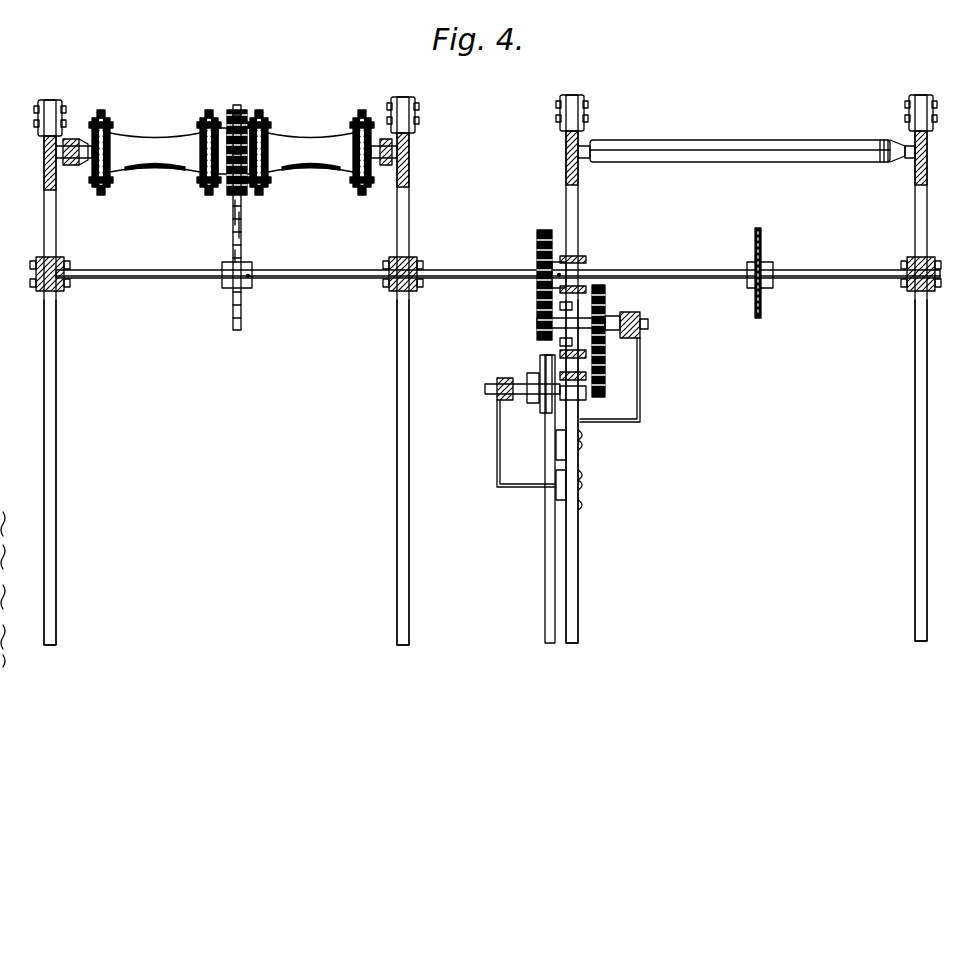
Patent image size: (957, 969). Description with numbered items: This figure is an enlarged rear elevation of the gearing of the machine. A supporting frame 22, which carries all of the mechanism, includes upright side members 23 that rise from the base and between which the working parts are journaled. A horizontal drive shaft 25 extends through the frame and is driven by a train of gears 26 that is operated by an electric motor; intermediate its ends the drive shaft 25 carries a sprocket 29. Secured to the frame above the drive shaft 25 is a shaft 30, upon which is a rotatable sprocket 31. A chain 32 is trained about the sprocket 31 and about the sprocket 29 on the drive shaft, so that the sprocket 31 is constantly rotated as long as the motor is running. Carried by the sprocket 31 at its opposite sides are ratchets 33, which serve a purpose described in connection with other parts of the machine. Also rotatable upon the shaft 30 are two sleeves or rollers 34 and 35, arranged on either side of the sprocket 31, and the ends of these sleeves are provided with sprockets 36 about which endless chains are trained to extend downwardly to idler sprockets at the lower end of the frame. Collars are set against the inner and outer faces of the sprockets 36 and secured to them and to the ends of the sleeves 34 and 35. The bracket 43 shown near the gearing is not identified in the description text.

The supporting frame 22 is at (405, 228).
The upright side members 23 is at (55, 430).
The horizontal drive shaft 25 is at (642, 270).
The train of gears 26 is at (605, 365).
The sprocket 29 is at (232, 318).
The shaft 30 is at (78, 140).
The sprocket 31 is at (240, 110).
The chain 32 is at (245, 240).
The ratchets 33 is at (258, 146).
The sleeve or roller 34 is at (155, 136).
The sleeve or roller 35 is at (313, 136).
The sprockets 36 is at (209, 110).
The bracket 43 is at (574, 545).